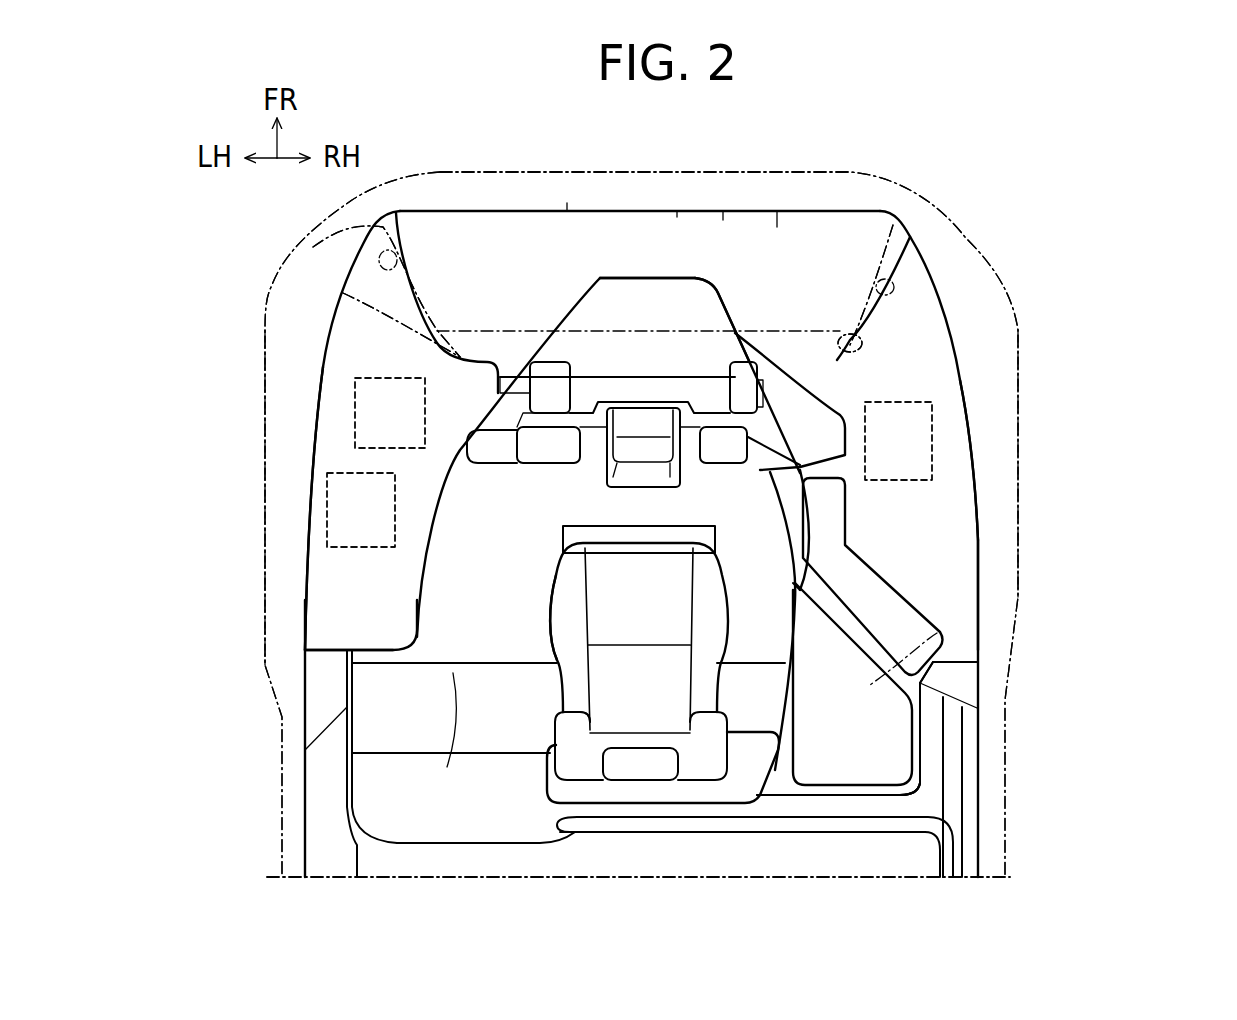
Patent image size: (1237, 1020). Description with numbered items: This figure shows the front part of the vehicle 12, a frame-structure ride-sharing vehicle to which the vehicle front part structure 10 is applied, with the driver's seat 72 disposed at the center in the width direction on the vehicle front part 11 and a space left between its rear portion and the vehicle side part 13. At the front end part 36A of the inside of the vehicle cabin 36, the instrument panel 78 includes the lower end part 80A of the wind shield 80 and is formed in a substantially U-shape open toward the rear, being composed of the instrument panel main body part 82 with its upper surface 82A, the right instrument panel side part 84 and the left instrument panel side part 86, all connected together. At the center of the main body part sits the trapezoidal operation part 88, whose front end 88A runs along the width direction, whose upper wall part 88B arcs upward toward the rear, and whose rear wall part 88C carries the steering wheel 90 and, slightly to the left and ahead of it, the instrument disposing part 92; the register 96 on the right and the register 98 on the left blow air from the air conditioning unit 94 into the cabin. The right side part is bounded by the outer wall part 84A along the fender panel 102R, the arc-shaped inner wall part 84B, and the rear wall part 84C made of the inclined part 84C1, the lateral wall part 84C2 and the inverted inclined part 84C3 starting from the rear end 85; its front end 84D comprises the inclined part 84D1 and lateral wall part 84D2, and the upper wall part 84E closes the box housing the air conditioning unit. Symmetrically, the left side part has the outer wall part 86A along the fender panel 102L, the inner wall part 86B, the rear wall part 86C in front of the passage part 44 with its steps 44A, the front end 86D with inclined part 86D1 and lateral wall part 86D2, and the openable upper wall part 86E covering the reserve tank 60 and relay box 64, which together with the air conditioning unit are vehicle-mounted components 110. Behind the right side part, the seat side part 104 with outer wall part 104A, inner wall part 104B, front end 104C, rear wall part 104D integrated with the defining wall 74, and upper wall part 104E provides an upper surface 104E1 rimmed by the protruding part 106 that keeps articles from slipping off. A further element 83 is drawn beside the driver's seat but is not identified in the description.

The vehicle front part structure 10 is at (638, 524).
The vehicle front part 11 is at (1020, 245).
The vehicle 12 is at (1103, 184).
The vehicle side part 13 is at (343, 703).
The vehicle cabin 36 is at (763, 526).
The front end part of the inside of the vehicle cabin 36A is at (777, 227).
The passage part 44 is at (507, 656).
The steps 44A is at (435, 672).
The reserve tank 60 is at (360, 416).
The relay box 64 is at (343, 510).
The driver's seat 72 is at (750, 605).
The defining wall 74 is at (550, 783).
The instrument panel 78 is at (466, 200).
The wind shield 80 is at (513, 207).
The lower end part of the wind shield 80A is at (567, 203).
The instrument panel main body part 82 is at (723, 220).
The upper surface of the instrument panel main body part 82A is at (677, 217).
The seat side 83 is at (554, 574).
The instrument panel side part 84 is at (973, 366).
The outer wall part 84A is at (977, 531).
The inner wall part 84B is at (848, 547).
The rear wall part 84C is at (1105, 605).
The inclined part 84C1 is at (937, 633).
The lateral wall part 84C2 is at (963, 662).
The inclined part 84C3 is at (933, 680).
The front end of the instrument panel side part 84D is at (1138, 277).
The inclined part 84D1 is at (893, 292).
The lateral wall part 84D2 is at (860, 333).
The upper wall part 84E is at (953, 493).
The rear end of the inclined part 85 is at (597, 693).
The instrument panel side part 86 is at (312, 366).
The outer wall part 86A is at (313, 455).
The inner wall part 86B is at (423, 555).
The rear wall part 86C is at (330, 657).
The front end of the instrument panel side part 86D is at (197, 232).
The inclined part 86D1 is at (313, 247).
The lateral wall part 86D2 is at (343, 293).
The upper wall part 86E is at (322, 587).
The operation part 88 is at (580, 475).
The front end of the operation part 88A is at (633, 278).
The upper wall part 88B is at (710, 295).
The rear wall part 88C is at (590, 385).
The steering wheel 90 is at (608, 478).
The instrument disposing part 92 is at (683, 425).
The air conditioning unit 94 is at (917, 443).
The register 96 is at (837, 468).
The register 98 is at (480, 453).
The fender panel 102L is at (265, 398).
The fender panel 102R is at (1020, 408).
The seat side part 104 is at (932, 757).
The outer wall part 104A is at (922, 774).
The inner wall part 104B is at (852, 684).
The front end 104C is at (832, 730).
The rear wall part 104D is at (927, 793).
The upper wall part 104E is at (920, 738).
The upper surface of the upper wall part 104E1 is at (825, 787).
The protruding part 106 is at (860, 797).
The vehicle-mounted components 110 is at (629, 462).